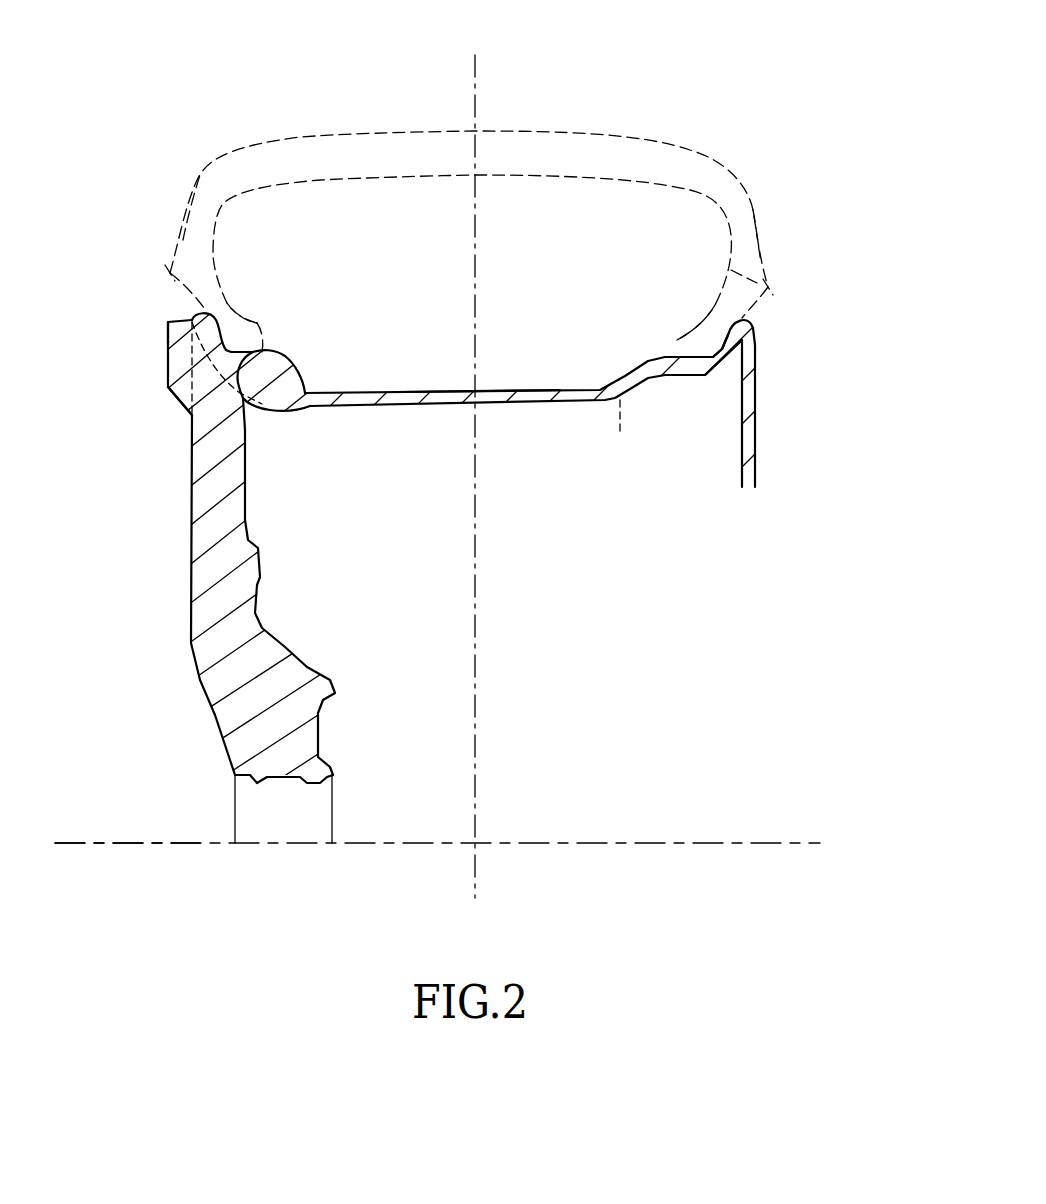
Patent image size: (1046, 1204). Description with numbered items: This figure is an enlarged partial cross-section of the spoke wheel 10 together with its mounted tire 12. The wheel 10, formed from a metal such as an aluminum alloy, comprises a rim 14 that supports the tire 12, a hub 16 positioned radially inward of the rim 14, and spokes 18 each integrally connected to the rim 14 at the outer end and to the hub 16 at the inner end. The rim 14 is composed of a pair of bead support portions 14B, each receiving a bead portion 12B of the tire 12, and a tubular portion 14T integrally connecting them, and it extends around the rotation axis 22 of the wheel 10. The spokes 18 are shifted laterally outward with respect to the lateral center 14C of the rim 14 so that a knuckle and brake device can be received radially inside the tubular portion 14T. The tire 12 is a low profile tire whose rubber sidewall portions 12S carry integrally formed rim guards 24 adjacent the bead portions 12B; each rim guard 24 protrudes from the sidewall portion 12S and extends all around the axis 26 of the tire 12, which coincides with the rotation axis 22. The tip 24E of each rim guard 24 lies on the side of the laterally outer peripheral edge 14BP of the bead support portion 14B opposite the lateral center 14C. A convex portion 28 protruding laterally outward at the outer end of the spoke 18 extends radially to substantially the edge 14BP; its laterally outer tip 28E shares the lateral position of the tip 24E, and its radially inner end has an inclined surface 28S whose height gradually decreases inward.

The spoke wheel 10 is at (168, 654).
The tire 12 is at (681, 147).
The sidewall portion 12S is at (192, 221).
The bead portion 12B is at (262, 318).
The rim 14 is at (407, 408).
The lateral center 14C is at (478, 87).
The tubular portion 14T is at (529, 403).
The bead support portion 14B is at (267, 422).
The laterally outer peripheral edge 14BP is at (192, 313).
The hub 16 is at (300, 730).
The spoke 18 is at (256, 530).
The rotation axis 22 is at (719, 840).
The rim guard 24 is at (215, 256).
The tip 24E is at (170, 274).
The axis 26 is at (116, 840).
The convex portion 28 is at (176, 367).
The laterally outer tip 28E is at (168, 333).
The inclined surface 28S is at (176, 395).